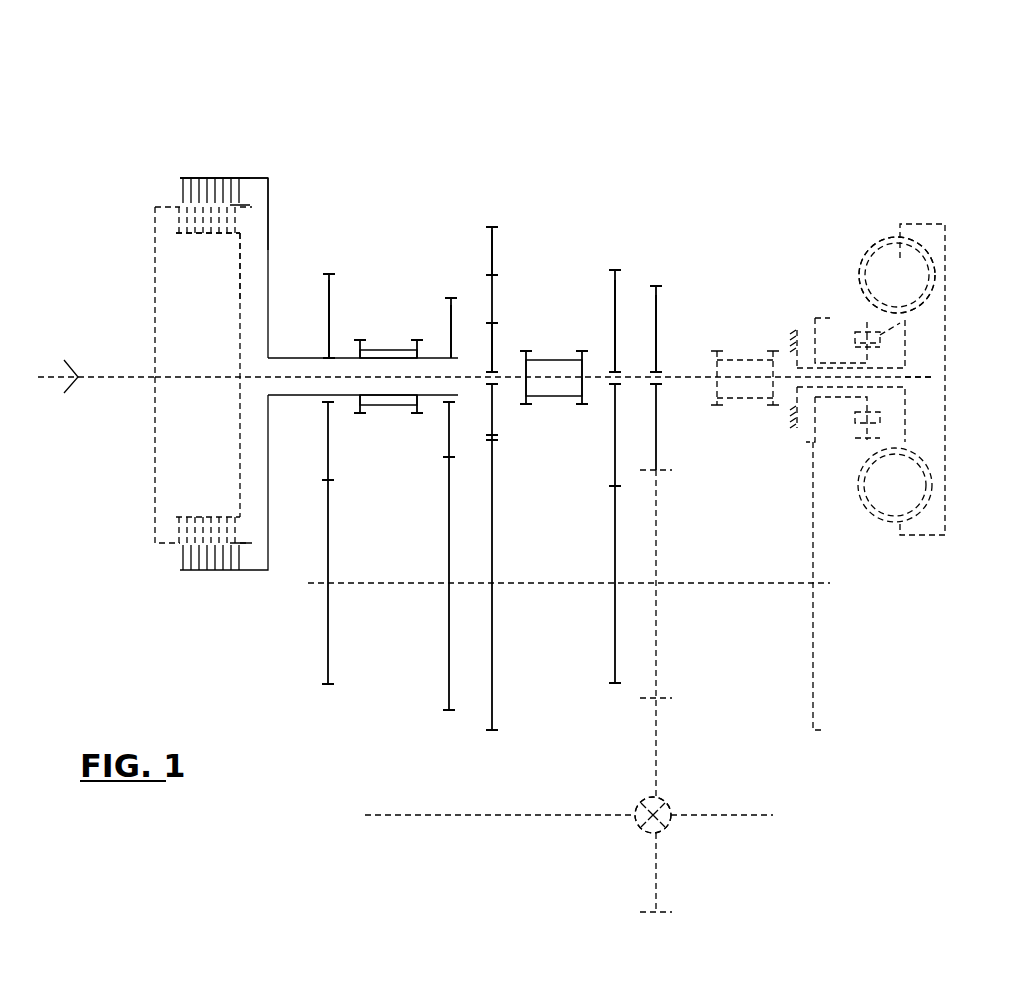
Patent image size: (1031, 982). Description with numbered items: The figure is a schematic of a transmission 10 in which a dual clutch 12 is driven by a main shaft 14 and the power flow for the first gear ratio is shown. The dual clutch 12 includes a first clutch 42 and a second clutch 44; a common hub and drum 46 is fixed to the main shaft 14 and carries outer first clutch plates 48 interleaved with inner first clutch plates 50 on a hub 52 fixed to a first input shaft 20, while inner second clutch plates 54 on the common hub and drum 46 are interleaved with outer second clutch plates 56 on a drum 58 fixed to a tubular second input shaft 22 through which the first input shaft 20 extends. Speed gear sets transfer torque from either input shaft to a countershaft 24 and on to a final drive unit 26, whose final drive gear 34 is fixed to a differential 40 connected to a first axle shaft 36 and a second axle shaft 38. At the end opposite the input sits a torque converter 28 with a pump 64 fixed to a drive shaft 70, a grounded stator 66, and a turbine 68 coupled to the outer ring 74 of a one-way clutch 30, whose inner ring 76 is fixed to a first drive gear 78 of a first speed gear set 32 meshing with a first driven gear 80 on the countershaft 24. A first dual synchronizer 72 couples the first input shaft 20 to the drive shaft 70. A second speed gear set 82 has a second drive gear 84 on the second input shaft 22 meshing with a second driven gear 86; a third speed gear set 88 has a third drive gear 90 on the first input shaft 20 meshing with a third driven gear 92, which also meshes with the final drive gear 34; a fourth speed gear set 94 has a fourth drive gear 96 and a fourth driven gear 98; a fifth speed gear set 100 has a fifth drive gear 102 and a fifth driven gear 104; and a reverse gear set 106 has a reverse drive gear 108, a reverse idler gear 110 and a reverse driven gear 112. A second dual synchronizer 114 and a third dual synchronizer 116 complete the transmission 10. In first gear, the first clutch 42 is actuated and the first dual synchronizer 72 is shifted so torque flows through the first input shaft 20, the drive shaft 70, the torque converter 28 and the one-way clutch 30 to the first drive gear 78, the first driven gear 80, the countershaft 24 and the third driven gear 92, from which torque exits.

The transmission 10 is at (328, 143).
The dual clutch 12 is at (205, 162).
The main shaft 14 is at (121, 373).
The first input shaft 20 is at (252, 379).
The second input shaft 22 is at (290, 357).
The countershaft 24 is at (355, 582).
The final drive unit 26 is at (703, 836).
The torque converter 28 is at (889, 220).
The one-way clutch 30 is at (847, 320).
The first speed gear set 32 is at (798, 304).
The final drive gear 34 is at (656, 748).
The first axle shaft 36 is at (738, 814).
The second axle shaft 38 is at (401, 813).
The differential 40 is at (646, 797).
The first clutch 42 is at (204, 240).
The second clutch 44 is at (227, 166).
The common hub and drum 46 is at (156, 225).
The outer first clutch plates 48 is at (179, 222).
The inner first clutch plates 50 is at (222, 230).
The hub 52 is at (241, 246).
The inner second clutch plates 54 is at (238, 197).
The outer second clutch plates 56 is at (237, 183).
The drum 58 is at (268, 216).
The pump 64 is at (913, 240).
The stator 66 is at (885, 297).
The turbine 68 is at (862, 260).
The drive shaft 70 is at (934, 379).
The first dual synchronizer 72 is at (740, 407).
The outer ring 74 is at (862, 319).
The inner ring 76 is at (833, 363).
The first drive gear 78 is at (815, 329).
The first driven gear 80 is at (814, 522).
The second speed gear set 82 is at (455, 265).
The second drive gear 84 is at (450, 306).
The second driven gear 86 is at (448, 498).
The third speed gear set 88 is at (661, 239).
The third drive gear 90 is at (658, 309).
The third driven gear 92 is at (657, 530).
The fourth speed gear set 94 is at (352, 256).
The fourth drive gear 96 is at (331, 307).
The fourth driven gear 98 is at (328, 503).
The fifth speed gear set 100 is at (612, 239).
The fifth drive gear 102 is at (614, 298).
The fifth driven gear 104 is at (614, 517).
The reverse gear set 106 is at (485, 193).
The reverse drive gear 108 is at (496, 338).
The reverse idler gear 110 is at (494, 249).
The reverse driven gear 112 is at (494, 527).
The second dual synchronizer 114 is at (388, 408).
The third dual synchronizer 116 is at (557, 401).